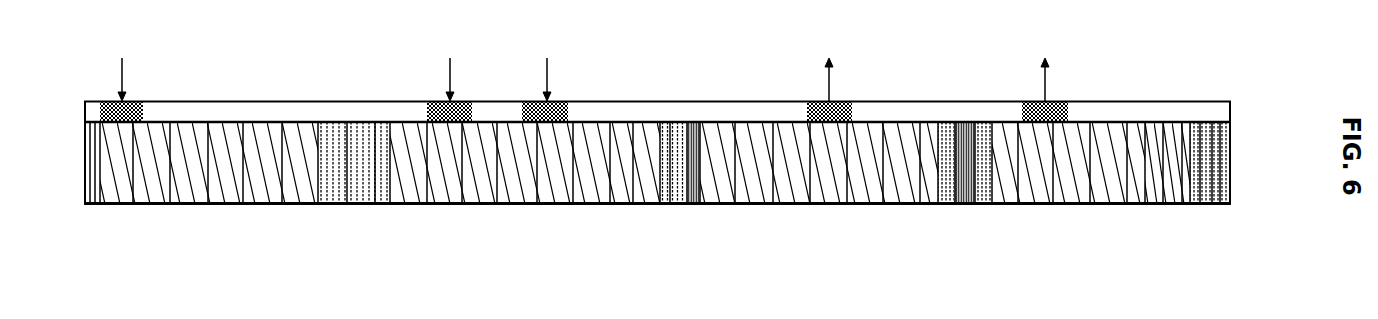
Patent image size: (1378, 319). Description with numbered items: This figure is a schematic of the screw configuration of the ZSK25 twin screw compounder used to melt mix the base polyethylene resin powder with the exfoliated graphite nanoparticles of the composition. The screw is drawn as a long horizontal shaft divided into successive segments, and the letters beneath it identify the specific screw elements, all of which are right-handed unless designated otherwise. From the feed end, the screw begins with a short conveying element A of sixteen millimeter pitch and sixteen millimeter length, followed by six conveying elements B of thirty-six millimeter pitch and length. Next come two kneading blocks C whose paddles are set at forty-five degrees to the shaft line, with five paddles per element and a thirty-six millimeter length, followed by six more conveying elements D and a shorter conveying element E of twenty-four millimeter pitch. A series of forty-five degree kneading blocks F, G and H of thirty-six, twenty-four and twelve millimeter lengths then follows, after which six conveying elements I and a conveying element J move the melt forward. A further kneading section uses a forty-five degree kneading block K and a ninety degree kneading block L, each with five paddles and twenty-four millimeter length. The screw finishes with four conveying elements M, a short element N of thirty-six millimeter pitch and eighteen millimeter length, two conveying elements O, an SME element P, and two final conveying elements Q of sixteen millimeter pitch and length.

The screw element 16/16 A is at (129, 188).
The screw element 6 × 36/36 B is at (250, 188).
The kneading block 2 × KB45/5/36 C is at (354, 188).
The screw element 6 × 36/36 D is at (489, 188).
The screw element 24/24 E is at (604, 188).
The kneading block KB45/5/36 F is at (632, 188).
The kneading block KB45/5/24 G is at (664, 188).
The kneading block KB45/5/12 H is at (736, 188).
The screw element 6 × 36/36 I is at (842, 188).
The screw element 24/24 J is at (910, 188).
The kneading block KB45/5/24 K is at (940, 188).
The kneading block KB90/5/24 L is at (993, 188).
The screw element 4 × 36/36 M is at (1071, 188).
The screw element 36/18 N is at (1123, 188).
The screw element 2 × 24/24 O is at (1150, 188).
The screw element SME 16/16 P is at (1179, 188).
The screw element 2 × 16/16 Q is at (1211, 188).